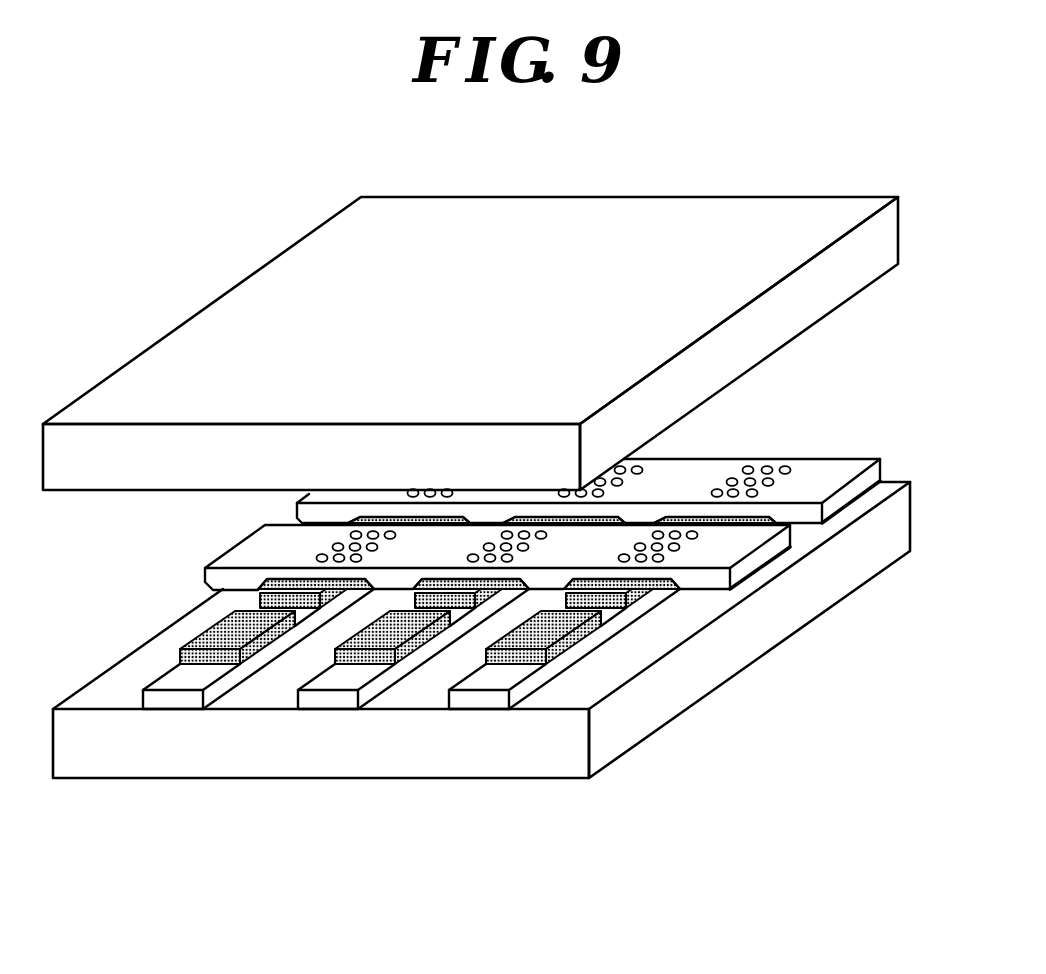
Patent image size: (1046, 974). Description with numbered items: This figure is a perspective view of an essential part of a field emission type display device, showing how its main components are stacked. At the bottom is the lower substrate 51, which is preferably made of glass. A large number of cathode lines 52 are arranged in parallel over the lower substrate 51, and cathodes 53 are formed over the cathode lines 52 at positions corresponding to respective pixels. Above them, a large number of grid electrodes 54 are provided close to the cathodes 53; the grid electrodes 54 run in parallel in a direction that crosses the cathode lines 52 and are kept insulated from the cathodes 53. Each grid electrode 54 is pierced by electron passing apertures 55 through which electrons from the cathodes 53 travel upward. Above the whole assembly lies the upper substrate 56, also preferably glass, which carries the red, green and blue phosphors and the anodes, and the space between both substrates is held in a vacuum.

The lower substrate 51 is at (648, 722).
The cathode lines 52 is at (170, 700).
The cathodes 53 is at (193, 642).
The grid electrodes 54 is at (752, 565).
The electron passing apertures 55 is at (772, 458).
The upper substrate 56 is at (470, 343).